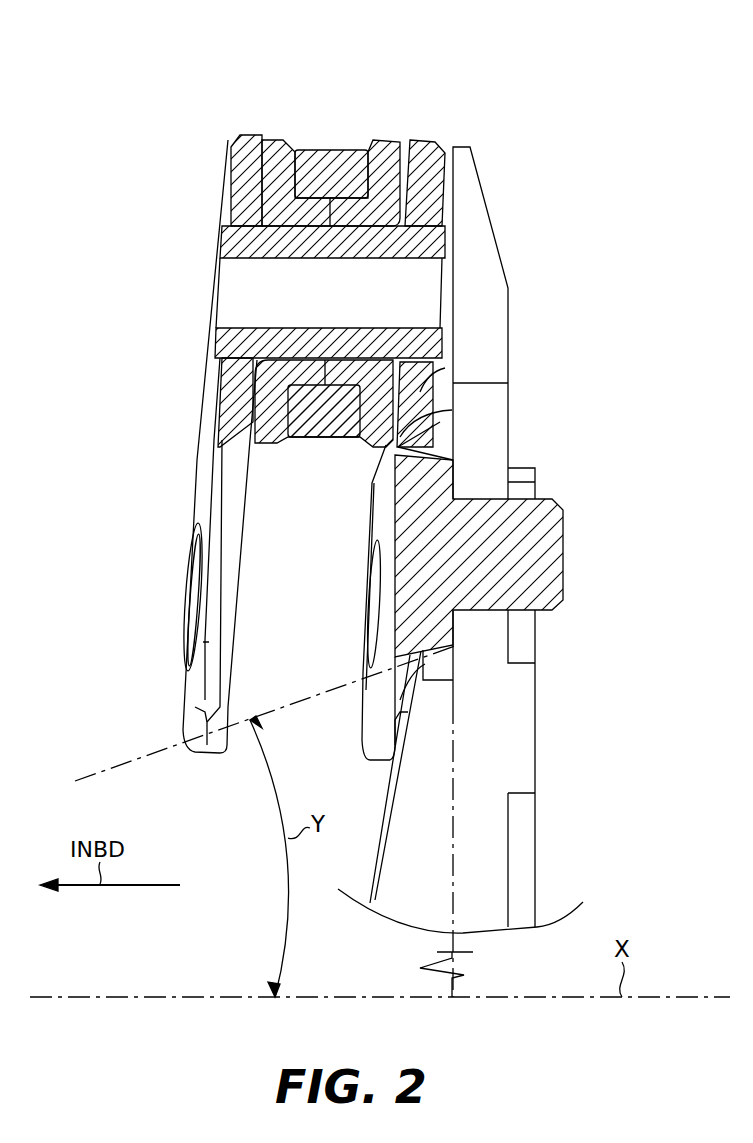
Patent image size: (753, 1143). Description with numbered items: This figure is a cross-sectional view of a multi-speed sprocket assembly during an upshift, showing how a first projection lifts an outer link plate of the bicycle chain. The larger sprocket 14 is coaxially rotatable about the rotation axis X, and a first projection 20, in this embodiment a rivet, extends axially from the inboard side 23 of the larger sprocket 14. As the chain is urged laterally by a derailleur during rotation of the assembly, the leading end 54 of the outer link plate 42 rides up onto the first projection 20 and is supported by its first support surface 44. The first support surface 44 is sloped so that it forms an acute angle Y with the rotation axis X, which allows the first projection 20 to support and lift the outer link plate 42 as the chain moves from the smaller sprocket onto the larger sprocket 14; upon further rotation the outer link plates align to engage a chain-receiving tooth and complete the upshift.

The outer link plate 42 is at (431, 152).
The larger sprocket 14 is at (497, 304).
The leading end 54 is at (440, 375).
The first support surface 44 is at (453, 443).
The first projection 20 is at (548, 552).
The inboard side 23 is at (384, 450).